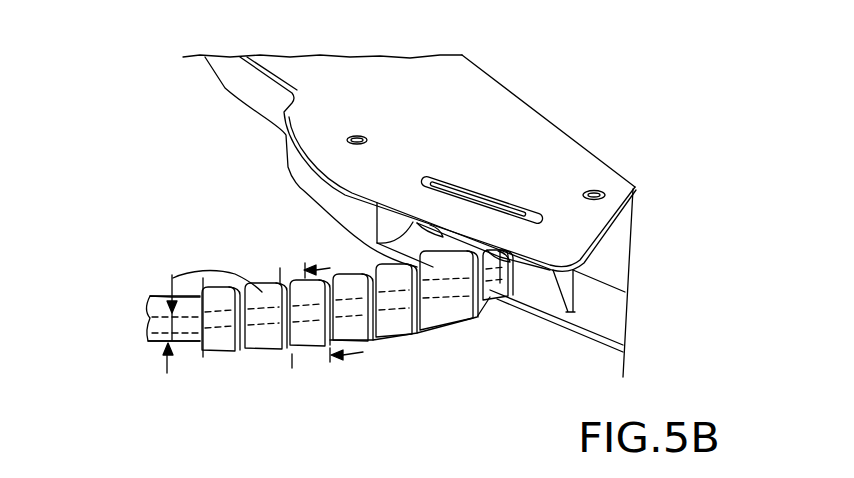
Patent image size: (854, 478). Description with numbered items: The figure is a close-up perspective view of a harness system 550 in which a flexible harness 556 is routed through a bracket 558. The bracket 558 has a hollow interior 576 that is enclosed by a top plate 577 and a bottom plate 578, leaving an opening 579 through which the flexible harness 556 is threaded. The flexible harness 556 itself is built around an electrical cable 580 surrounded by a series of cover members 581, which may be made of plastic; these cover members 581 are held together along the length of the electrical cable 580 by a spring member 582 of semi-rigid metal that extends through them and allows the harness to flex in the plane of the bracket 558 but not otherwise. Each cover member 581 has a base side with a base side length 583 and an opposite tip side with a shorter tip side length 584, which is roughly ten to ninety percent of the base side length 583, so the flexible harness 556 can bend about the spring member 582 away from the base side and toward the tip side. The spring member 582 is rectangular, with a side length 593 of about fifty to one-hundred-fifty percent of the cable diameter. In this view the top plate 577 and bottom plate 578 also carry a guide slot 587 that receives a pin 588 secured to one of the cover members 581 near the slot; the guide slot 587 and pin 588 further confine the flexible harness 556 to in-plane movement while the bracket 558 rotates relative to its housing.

The harness system 550 is at (152, 106).
The flexible harness 556 is at (247, 362).
The bracket 558 is at (613, 263).
The hollow interior 576 is at (356, 253).
The top plate 577 is at (550, 140).
The bottom plate 578 is at (553, 297).
The opening 579 is at (507, 290).
The electrical cable 580 is at (148, 340).
The cover members 581 is at (172, 278).
The spring member 582 is at (243, 327).
The base side length 583 is at (279, 361).
The tip side length 584 is at (267, 277).
The guide slot 587 is at (436, 176).
The pin 588 is at (507, 185).
The side length 593 is at (167, 373).